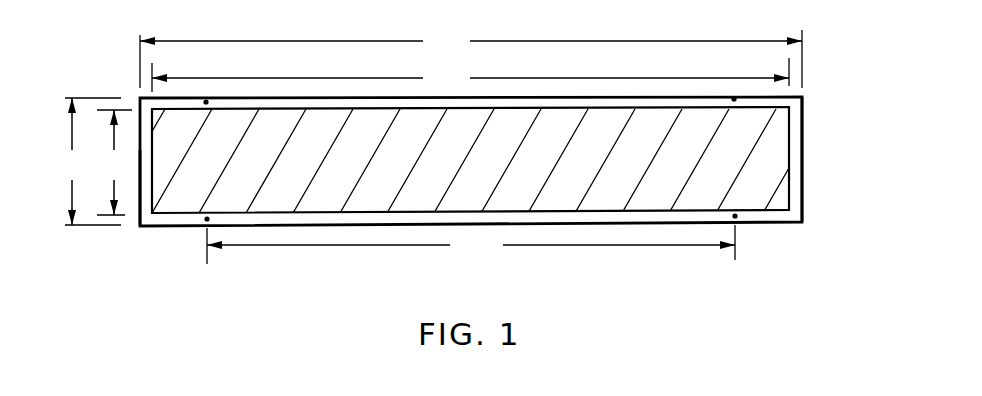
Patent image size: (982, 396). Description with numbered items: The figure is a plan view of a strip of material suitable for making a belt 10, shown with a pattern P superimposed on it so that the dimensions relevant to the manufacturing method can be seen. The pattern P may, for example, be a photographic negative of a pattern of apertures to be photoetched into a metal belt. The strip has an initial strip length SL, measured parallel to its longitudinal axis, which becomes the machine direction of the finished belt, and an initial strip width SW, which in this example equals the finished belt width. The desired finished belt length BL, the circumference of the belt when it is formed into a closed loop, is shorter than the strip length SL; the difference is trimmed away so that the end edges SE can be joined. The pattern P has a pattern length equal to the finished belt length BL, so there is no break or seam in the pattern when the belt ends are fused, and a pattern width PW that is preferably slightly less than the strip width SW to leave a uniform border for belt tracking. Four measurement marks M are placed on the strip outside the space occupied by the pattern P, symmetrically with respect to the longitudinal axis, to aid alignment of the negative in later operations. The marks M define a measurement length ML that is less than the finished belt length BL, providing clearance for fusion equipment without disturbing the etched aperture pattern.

The belt 10 is at (643, 223).
The pattern P is at (480, 163).
The end edges SE is at (140, 181).
The measurement marks M is at (206, 102).
The strip length SL is at (471, 59).
The finished belt length BL is at (470, 75).
The measurement length ML is at (471, 244).
The strip width SW is at (89, 161).
The pattern width PW is at (114, 162).